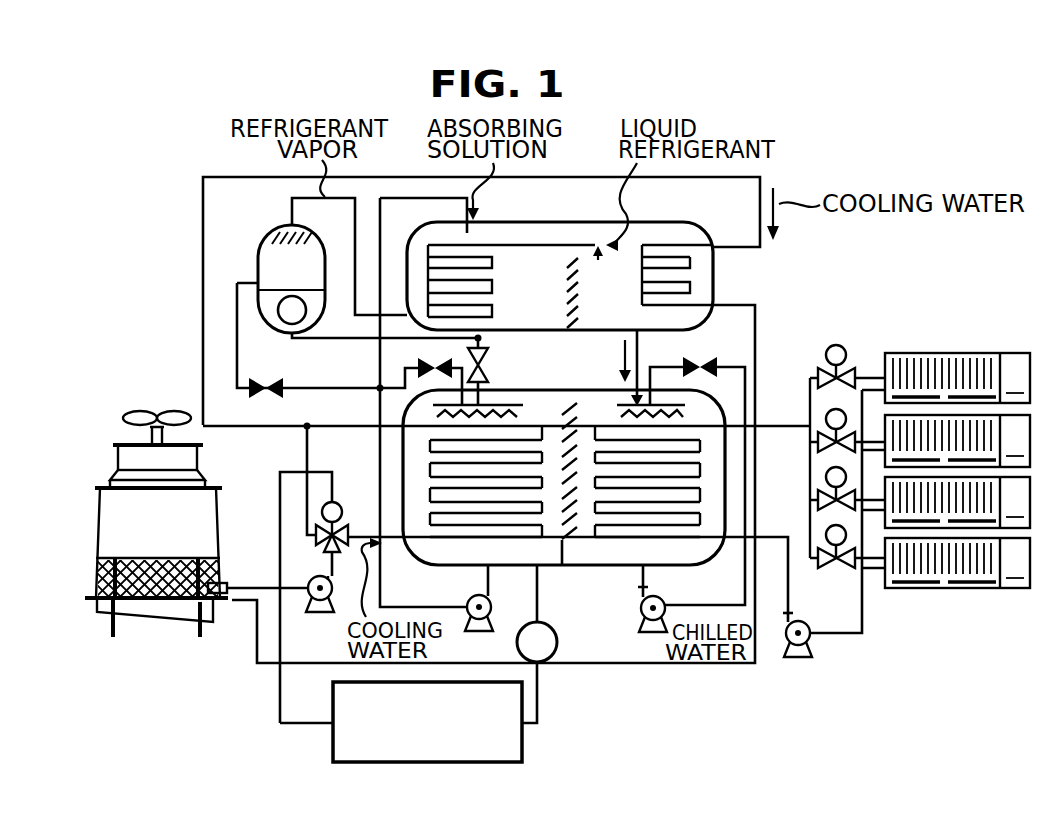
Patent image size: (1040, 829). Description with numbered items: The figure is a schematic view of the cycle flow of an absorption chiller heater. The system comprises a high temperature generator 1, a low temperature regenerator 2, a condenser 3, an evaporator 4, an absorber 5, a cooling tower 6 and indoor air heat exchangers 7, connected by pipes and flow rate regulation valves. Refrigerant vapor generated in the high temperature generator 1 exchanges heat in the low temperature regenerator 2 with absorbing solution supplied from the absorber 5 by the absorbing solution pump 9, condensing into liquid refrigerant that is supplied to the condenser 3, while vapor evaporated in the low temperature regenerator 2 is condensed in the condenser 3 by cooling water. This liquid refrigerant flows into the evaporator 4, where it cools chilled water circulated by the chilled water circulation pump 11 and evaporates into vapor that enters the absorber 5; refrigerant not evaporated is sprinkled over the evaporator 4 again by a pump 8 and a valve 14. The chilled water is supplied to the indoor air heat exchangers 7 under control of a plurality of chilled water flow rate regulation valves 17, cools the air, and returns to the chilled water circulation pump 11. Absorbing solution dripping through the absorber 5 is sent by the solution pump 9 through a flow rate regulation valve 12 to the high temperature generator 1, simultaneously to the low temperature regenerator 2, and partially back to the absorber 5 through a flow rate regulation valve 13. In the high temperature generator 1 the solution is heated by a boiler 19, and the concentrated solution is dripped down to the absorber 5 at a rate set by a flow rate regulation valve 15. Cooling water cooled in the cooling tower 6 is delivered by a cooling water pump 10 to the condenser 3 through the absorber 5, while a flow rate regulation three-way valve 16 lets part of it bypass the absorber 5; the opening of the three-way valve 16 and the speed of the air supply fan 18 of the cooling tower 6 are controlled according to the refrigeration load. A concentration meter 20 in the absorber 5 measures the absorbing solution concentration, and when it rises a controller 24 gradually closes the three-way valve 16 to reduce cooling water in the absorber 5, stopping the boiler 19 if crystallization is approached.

The high temperature generator 1 is at (262, 230).
The low temperature regenerator 2 is at (420, 225).
The condenser 3 is at (697, 218).
The evaporator 4 is at (674, 547).
The absorber 5 is at (410, 562).
The cooling tower 6 is at (218, 515).
The indoor air heat exchangers 7 is at (928, 590).
The pump 8 is at (641, 597).
The absorbing solution pump 9 is at (491, 603).
The cooling water pump 10 is at (318, 601).
The chilled water circulation pump 11 is at (803, 650).
The flow rate regulation valve 12 is at (273, 382).
The flow rate regulation valve 13 is at (418, 360).
The valve 14 is at (703, 358).
The flow rate regulation valve 15 is at (487, 361).
The flow rate regulation three-way valve 16 is at (340, 527).
The chilled water flow rate regulation valves 17 is at (830, 347).
The air supply fan 18 is at (157, 411).
The boiler 19 is at (288, 326).
The concentration meter 20 is at (558, 643).
The controller 24 is at (522, 756).